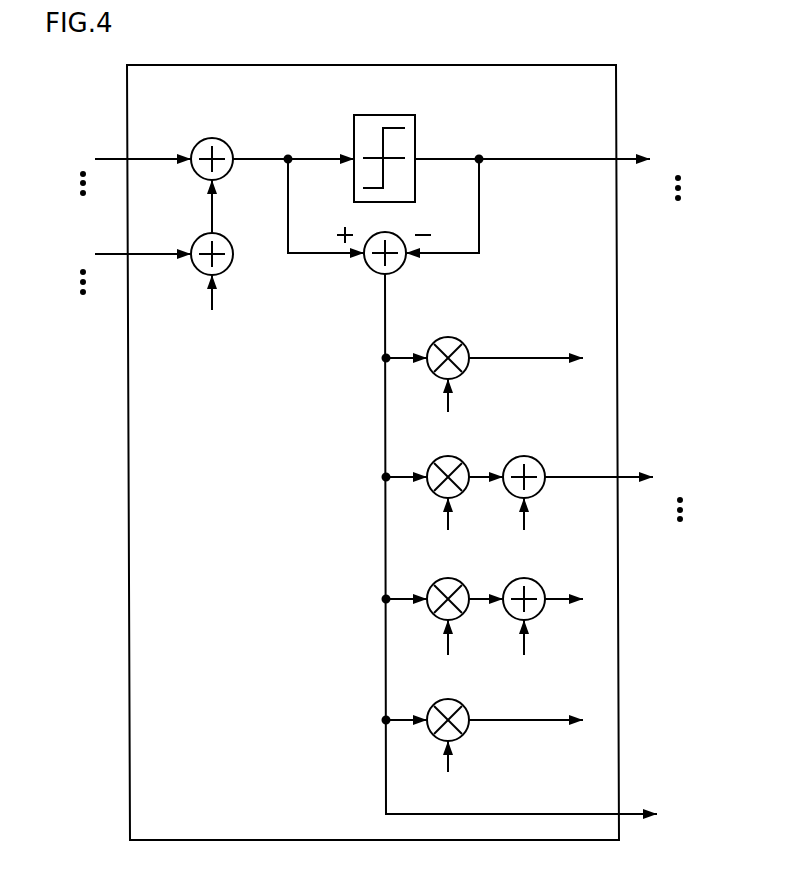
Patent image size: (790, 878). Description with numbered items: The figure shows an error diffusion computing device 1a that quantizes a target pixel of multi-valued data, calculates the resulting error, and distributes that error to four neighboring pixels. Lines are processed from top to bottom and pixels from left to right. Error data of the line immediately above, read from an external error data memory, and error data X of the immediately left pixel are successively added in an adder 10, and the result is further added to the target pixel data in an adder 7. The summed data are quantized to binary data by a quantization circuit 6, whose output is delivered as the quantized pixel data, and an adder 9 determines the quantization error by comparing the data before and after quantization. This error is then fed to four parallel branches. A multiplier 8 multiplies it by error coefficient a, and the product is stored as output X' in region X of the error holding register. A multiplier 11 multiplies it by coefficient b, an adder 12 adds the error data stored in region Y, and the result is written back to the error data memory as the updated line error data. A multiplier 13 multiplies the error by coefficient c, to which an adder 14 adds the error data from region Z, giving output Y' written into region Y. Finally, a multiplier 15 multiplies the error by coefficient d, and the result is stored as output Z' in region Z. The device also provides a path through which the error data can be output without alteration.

The error diffusion computing device 1a is at (616, 108).
The quantization circuit 6 is at (415, 145).
The adder 7 is at (228, 143).
The multiplier 8 is at (463, 342).
The adder 9 is at (400, 271).
The adder 10 is at (228, 240).
The multiplier 11 is at (463, 461).
The adder 12 is at (539, 461).
The multiplier 13 is at (463, 583).
The adder 14 is at (539, 583).
The multiplier 15 is at (463, 704).